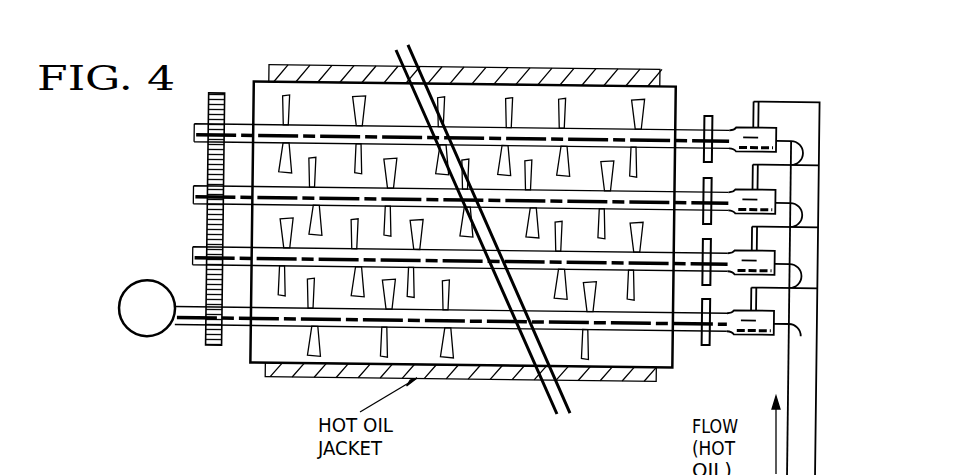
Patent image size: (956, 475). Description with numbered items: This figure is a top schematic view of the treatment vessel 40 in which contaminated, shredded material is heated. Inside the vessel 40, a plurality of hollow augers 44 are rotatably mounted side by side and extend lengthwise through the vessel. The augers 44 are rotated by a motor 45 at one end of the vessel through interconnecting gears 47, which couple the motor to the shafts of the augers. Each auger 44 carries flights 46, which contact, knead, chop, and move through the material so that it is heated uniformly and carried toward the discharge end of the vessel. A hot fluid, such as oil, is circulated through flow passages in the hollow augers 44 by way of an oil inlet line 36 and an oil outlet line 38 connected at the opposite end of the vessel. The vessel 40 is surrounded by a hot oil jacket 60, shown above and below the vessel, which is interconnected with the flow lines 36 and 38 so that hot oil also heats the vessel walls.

The oil inlet line 36 is at (787, 372).
The oil outlet line 38 is at (820, 198).
The treatment vessel 40 is at (368, 66).
The hollow augers 44 is at (243, 118).
The motor 45 is at (150, 338).
The flights 46 is at (513, 108).
The interconnecting gears 47 is at (205, 142).
The hot oil jacket 60 is at (305, 377).